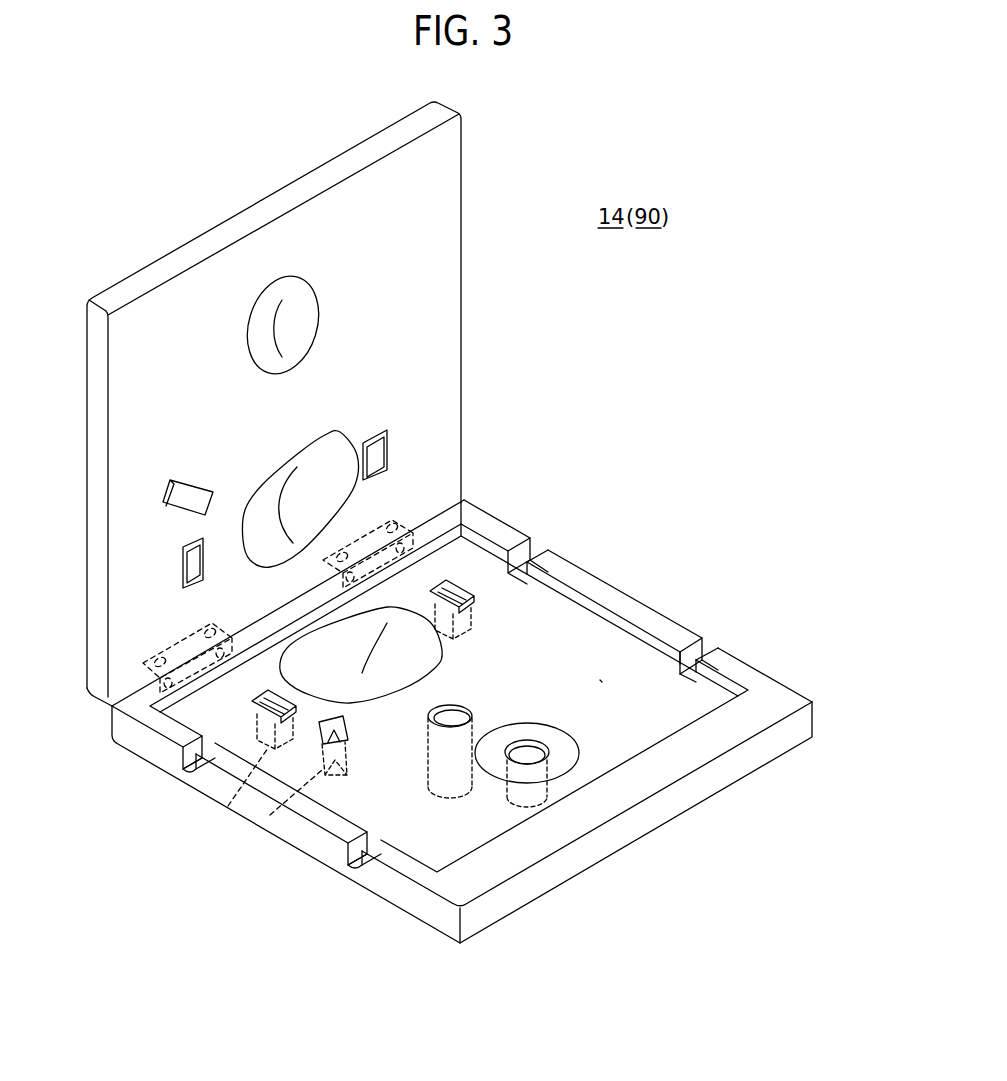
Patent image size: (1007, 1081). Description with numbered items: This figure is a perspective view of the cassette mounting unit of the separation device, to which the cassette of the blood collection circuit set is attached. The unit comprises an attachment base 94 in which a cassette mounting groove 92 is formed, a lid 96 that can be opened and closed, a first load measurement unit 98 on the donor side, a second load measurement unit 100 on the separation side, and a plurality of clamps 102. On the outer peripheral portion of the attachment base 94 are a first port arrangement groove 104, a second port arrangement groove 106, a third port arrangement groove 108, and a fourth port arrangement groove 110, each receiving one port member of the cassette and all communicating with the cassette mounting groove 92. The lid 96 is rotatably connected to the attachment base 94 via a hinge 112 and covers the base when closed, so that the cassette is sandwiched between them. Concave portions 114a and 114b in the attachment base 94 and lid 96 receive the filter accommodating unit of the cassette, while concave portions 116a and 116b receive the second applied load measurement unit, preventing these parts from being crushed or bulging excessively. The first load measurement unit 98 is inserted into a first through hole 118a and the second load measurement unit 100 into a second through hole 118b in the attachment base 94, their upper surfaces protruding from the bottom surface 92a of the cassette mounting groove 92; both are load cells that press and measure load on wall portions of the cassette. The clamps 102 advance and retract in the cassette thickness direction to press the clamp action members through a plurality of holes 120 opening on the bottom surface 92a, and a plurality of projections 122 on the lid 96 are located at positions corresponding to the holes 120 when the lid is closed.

The cassette mounting groove 92 is at (541, 610).
The bottom surface 92a is at (574, 632).
The attachment base 94 is at (658, 608).
The lid 96 is at (442, 229).
The first load measurement unit 98 is at (430, 744).
The second load measurement unit 100 is at (552, 757).
The clamps 102 is at (183, 833).
The first port arrangement groove 104 is at (185, 758).
The second port arrangement groove 106 is at (524, 543).
The third port arrangement groove 108 is at (704, 645).
The fourth port arrangement groove 110 is at (356, 862).
The hinge 112 is at (386, 520).
The concave portion 114a is at (328, 637).
The concave portion 114b is at (327, 470).
The concave portion 116a is at (548, 738).
The concave portion 116b is at (306, 298).
The first through hole 118a is at (458, 712).
The second through hole 118b is at (524, 745).
The holes 120 is at (462, 612).
The projections 122 is at (382, 433).